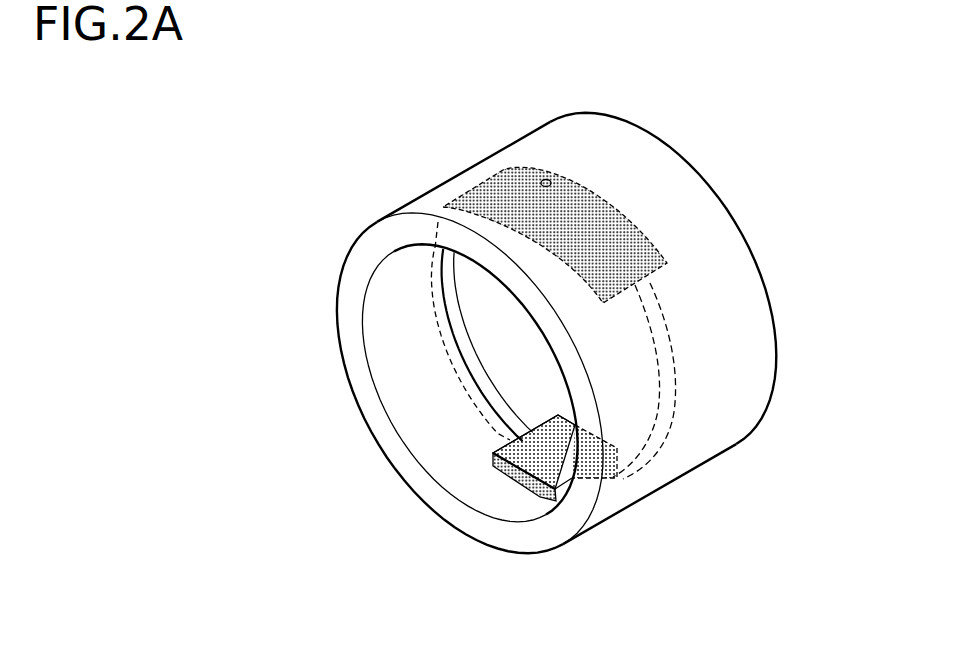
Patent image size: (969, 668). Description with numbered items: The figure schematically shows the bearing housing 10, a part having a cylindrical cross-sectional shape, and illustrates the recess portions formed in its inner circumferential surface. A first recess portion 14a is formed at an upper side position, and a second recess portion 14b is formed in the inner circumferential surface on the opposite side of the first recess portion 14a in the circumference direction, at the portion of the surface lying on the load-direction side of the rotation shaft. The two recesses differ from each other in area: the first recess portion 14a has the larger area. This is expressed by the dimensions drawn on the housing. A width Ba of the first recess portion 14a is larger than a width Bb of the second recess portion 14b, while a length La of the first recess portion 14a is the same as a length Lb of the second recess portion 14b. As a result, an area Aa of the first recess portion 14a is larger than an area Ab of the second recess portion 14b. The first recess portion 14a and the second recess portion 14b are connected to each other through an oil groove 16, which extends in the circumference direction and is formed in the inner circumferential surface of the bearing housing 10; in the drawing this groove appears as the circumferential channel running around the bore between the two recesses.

The bearing housing 10 is at (300, 250).
The first recess portion 14a is at (605, 244).
The second recess portion 14b is at (570, 470).
The oil groove 16 is at (463, 350).
The area of the first recess portion Aa is at (630, 217).
The area of the second recess portion Ab is at (497, 451).
The length of the first recess portion La is at (438, 212).
The length of the second recess portion Lb is at (619, 448).
The width of the first recess portion Ba is at (503, 170).
The width of the second recess portion Bb is at (555, 489).